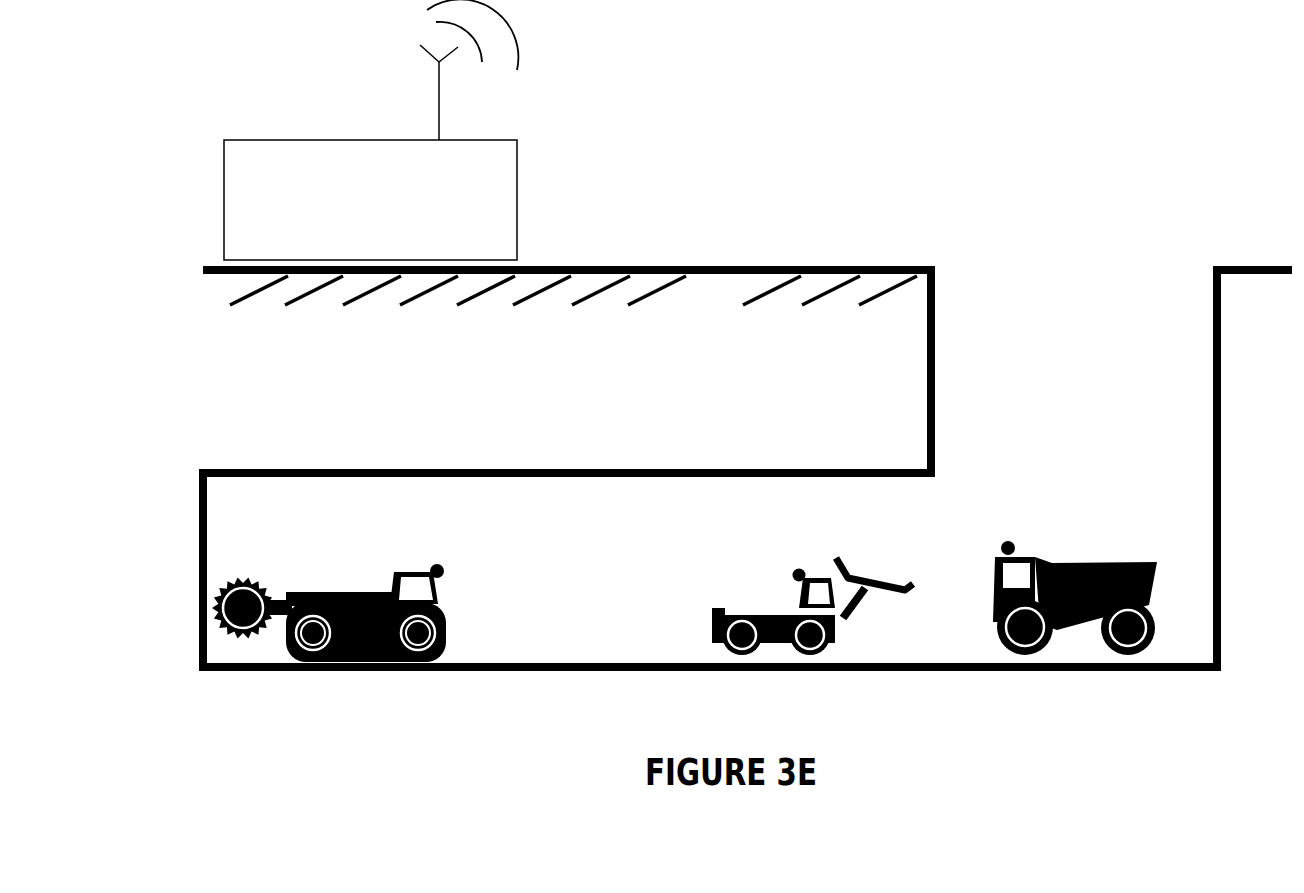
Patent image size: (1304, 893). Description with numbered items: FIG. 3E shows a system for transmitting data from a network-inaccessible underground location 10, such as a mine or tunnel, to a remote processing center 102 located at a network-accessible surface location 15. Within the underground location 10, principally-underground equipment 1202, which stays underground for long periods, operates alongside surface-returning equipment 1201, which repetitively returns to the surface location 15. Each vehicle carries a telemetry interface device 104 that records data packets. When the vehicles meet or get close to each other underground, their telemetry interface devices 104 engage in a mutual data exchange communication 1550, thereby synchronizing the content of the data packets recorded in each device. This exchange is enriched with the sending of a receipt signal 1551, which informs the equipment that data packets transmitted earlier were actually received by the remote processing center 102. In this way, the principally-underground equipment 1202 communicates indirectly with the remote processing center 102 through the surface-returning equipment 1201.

The underground location 10 is at (620, 542).
The surface location 15 is at (1068, 172).
The remote processing center 102 is at (280, 132).
The telemetry interface device 104 is at (431, 566).
The surface-returning equipment 1201 is at (1065, 640).
The principally-underground equipment 1202 is at (343, 675).
The data exchange communication 1550 is at (815, 557).
The receipt signal 1551 is at (990, 550).